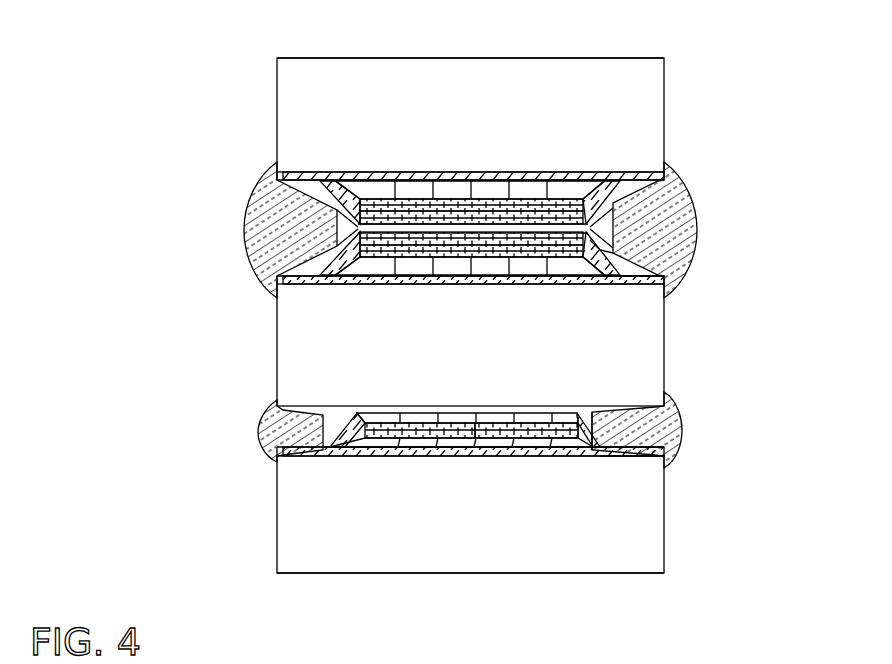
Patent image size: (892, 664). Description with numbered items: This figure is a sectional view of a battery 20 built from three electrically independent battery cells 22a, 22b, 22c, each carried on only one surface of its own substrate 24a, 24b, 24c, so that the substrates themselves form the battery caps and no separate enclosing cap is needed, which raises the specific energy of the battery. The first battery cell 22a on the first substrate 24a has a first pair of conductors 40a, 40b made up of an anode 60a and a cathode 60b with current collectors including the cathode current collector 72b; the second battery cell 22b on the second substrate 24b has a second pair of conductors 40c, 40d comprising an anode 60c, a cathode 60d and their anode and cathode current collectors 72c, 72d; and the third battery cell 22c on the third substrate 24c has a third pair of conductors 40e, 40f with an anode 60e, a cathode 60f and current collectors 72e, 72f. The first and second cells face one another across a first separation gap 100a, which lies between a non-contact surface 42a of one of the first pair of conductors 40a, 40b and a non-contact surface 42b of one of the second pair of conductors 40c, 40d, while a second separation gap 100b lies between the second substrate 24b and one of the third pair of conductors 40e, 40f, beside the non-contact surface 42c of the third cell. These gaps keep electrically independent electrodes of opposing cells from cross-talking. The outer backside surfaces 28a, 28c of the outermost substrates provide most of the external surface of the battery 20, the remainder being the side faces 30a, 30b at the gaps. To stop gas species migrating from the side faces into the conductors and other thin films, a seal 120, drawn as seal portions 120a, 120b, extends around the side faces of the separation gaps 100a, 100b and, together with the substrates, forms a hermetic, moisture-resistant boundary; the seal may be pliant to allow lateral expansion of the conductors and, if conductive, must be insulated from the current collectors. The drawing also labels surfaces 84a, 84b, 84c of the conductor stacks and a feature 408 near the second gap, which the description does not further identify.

The battery 20 is at (157, 75).
The first battery cell 22a is at (605, 217).
The second battery cell 22b is at (600, 236).
The third battery cell 22c is at (585, 423).
The first substrate 24a is at (492, 92).
The second substrate 24b is at (488, 362).
The third substrate 24c is at (487, 560).
The external surface of substrate 28a is at (348, 57).
The outer plate surface 28c is at (322, 573).
The upper cell 30a is at (201, 247).
The lower cell 30b is at (205, 429).
The first conductor 40a is at (627, 173).
The second conductor 40b is at (590, 180).
The third conductor 40c is at (598, 275).
The fourth conductor 40d is at (542, 275).
The fifth conductor 40e is at (340, 456).
The sixth conductor 40f is at (548, 456).
The non-contact surface 42a is at (508, 190).
The non-contact surface 42b is at (362, 272).
The electrode segment divisions 42c is at (490, 413).
The anode 60a is at (493, 207).
The cathode 60b is at (565, 207).
The anode 60c is at (455, 252).
The cathode 60d is at (505, 245).
The anode 60e is at (440, 456).
The cathode 60f is at (505, 456).
The cathode current collector 72b is at (416, 178).
The anode current collector 72c is at (645, 284).
The cathode current collector 72d is at (392, 284).
The anode current collector 72e is at (315, 458).
The cathode current collector 72f is at (583, 456).
The electrode top surface 84a is at (458, 199).
The electrode bottom surface 84b is at (310, 284).
The electrode surface 84c is at (390, 456).
The first separation gap 100a is at (368, 225).
The second separation gap 100b is at (405, 413).
The seal 120 is at (623, 420).
The end seal 120a is at (672, 200).
The end seal 120b is at (663, 410).
The seal interface 408 is at (645, 456).